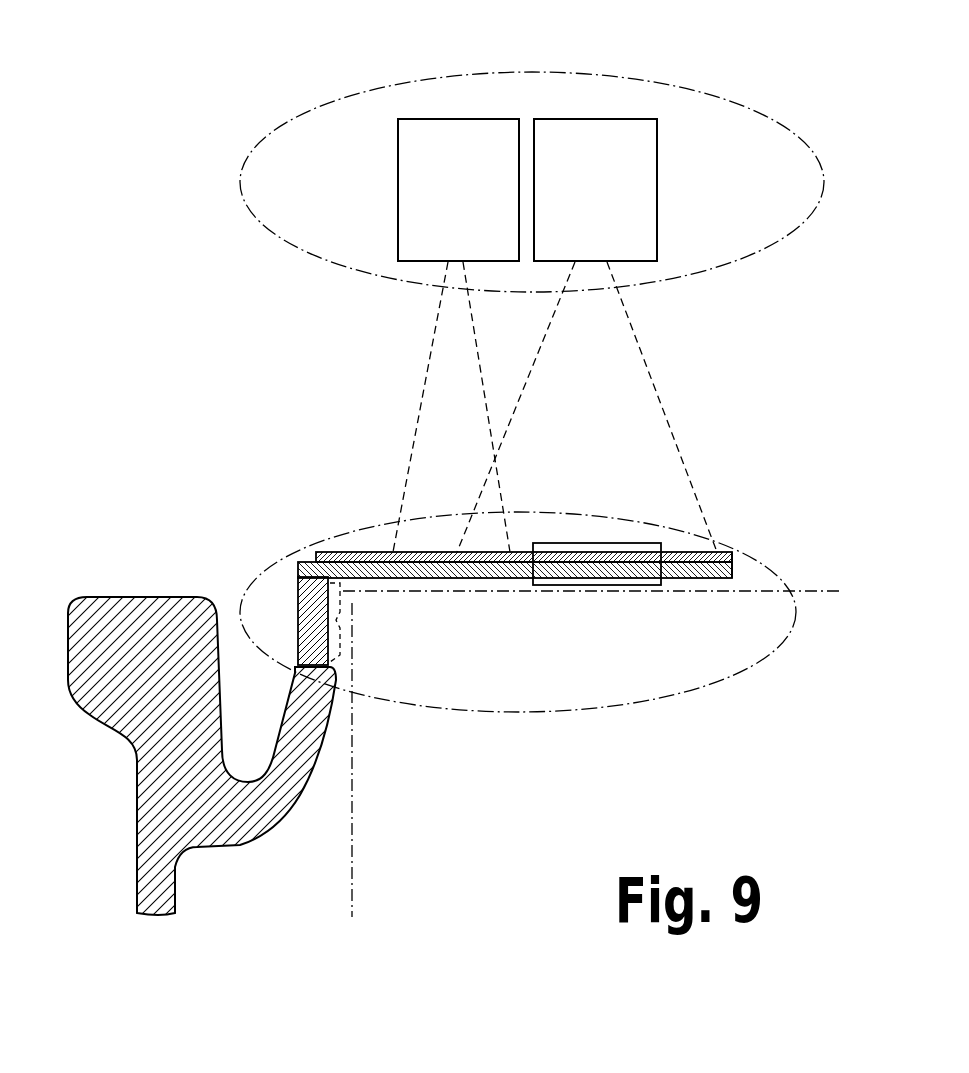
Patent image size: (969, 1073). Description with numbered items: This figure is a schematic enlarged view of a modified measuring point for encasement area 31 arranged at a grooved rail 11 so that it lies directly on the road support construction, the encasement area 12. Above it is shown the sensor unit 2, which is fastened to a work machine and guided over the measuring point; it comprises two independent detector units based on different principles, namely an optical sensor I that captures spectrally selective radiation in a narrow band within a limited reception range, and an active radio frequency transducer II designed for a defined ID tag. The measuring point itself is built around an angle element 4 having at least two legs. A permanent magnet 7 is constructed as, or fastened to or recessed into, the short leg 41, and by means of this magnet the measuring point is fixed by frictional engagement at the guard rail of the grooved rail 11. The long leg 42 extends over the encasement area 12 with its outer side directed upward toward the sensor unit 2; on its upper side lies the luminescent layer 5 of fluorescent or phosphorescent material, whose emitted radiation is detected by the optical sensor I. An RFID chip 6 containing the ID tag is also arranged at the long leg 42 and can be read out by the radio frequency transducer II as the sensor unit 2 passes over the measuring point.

The sensor unit 2 is at (532, 152).
The optical sensor I is at (412, 203).
The radio frequency transducer II is at (640, 200).
The measuring point for encasement area 31 is at (355, 530).
The encasement area 12 is at (830, 589).
The grooved rail 11 is at (138, 598).
The permanent magnet 7 is at (310, 619).
The short leg 41 is at (343, 623).
The long leg 42 is at (420, 578).
The angle element 4 is at (512, 578).
The RFID chip 6 is at (612, 588).
The luminescent layer 5 is at (717, 550).